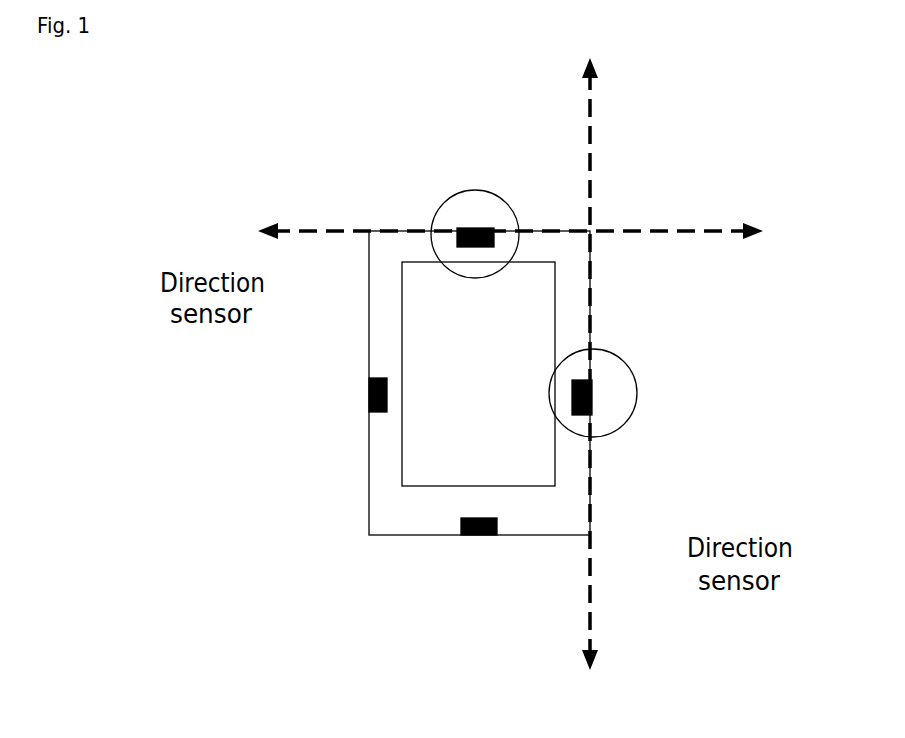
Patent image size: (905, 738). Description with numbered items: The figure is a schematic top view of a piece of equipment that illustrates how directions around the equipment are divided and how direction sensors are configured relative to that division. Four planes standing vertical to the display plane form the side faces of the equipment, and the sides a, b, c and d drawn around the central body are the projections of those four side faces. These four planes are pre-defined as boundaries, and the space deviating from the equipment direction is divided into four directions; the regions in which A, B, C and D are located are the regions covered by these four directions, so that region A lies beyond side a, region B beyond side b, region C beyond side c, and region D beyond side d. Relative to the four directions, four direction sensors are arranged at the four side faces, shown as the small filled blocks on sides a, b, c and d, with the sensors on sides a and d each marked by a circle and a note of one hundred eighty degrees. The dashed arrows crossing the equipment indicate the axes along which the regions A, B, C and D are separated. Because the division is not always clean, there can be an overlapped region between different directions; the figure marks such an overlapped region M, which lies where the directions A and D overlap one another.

The side a is at (653, 550).
The side b is at (653, 550).
The side c is at (307, 291).
The side d is at (457, 241).
The direction region A is at (763, 308).
The direction region B is at (536, 634).
The direction region C is at (264, 308).
The direction region D is at (532, 72).
The overlapped region M is at (537, 334).